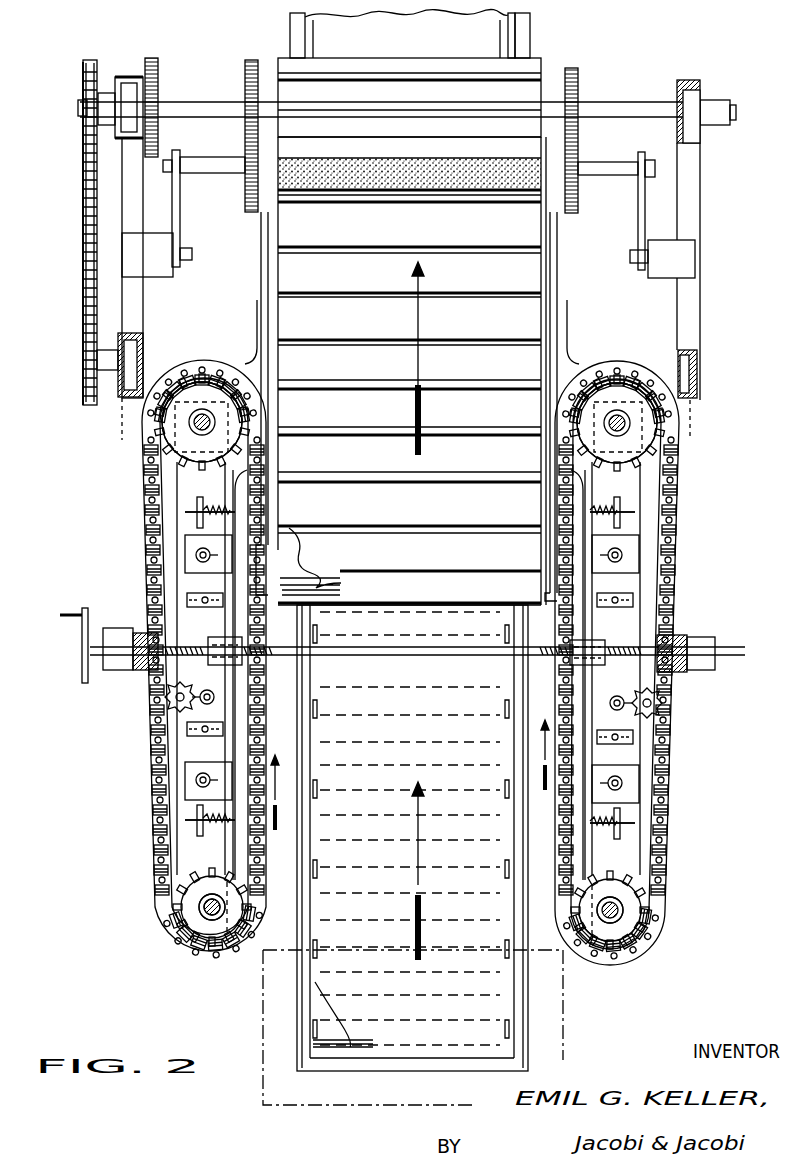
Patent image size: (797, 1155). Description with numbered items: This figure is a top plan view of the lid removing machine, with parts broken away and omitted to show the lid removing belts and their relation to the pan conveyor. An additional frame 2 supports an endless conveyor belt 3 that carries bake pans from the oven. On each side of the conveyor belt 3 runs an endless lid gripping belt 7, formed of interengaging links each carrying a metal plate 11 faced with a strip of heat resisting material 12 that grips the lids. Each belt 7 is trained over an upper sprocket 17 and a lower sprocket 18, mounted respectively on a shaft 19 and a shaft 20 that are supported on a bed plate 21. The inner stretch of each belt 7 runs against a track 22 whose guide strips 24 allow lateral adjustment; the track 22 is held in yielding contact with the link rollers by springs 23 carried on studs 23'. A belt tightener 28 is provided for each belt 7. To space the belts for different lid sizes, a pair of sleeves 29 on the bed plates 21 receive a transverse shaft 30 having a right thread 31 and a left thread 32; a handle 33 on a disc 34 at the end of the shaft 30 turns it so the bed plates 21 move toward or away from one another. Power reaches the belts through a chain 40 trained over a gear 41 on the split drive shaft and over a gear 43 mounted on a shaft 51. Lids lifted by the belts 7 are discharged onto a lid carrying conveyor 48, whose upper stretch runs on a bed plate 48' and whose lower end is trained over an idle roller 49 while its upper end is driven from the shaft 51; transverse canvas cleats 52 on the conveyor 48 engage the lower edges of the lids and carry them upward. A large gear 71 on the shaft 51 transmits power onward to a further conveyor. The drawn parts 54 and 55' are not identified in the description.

The additional frame 2 is at (303, 1005).
The endless conveyor belt 3 is at (390, 34).
The endless lid gripping belt 7 is at (135, 497).
The metal plate 11 is at (135, 320).
The strip of heat resisting material 12 is at (672, 802).
The upper sprocket 17 is at (182, 422).
The lower sprocket 18 is at (195, 938).
The shaft 19 is at (198, 425).
The shaft 20 is at (205, 902).
The bed plate 21 is at (202, 908).
The track 22 is at (262, 837).
The spring 23 is at (425, 679).
The stud 23' is at (419, 683).
The angular guide strip 24 is at (198, 570).
The belt tightener 28 is at (175, 702).
The sleeve 29 is at (222, 657).
The shaft 30 is at (393, 648).
The right thread 31 is at (545, 657).
The left thread 32 is at (245, 657).
The handle 33 is at (62, 612).
The disc 34 is at (80, 642).
The chain 40 is at (85, 208).
The gear 41 is at (82, 338).
The gear 43 is at (86, 123).
The lid carrying conveyor 48 is at (443, 331).
The bed plate 48' is at (412, 406).
The idle roller 49 is at (300, 596).
The shaft 51 is at (199, 112).
The cleat 52 is at (323, 336).
The bearing box 54 is at (300, 190).
The support plate 55' is at (409, 210).
The large gear 71 is at (158, 72).